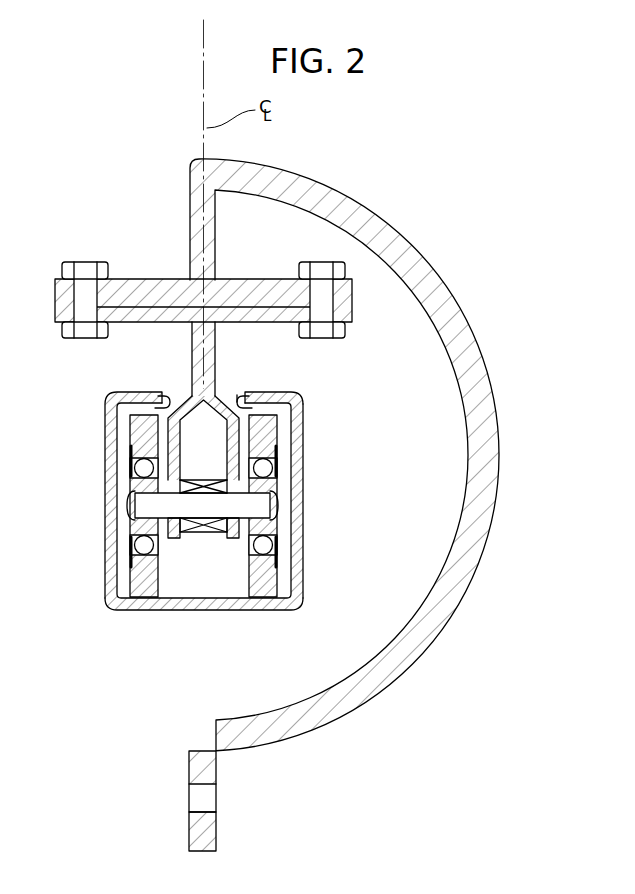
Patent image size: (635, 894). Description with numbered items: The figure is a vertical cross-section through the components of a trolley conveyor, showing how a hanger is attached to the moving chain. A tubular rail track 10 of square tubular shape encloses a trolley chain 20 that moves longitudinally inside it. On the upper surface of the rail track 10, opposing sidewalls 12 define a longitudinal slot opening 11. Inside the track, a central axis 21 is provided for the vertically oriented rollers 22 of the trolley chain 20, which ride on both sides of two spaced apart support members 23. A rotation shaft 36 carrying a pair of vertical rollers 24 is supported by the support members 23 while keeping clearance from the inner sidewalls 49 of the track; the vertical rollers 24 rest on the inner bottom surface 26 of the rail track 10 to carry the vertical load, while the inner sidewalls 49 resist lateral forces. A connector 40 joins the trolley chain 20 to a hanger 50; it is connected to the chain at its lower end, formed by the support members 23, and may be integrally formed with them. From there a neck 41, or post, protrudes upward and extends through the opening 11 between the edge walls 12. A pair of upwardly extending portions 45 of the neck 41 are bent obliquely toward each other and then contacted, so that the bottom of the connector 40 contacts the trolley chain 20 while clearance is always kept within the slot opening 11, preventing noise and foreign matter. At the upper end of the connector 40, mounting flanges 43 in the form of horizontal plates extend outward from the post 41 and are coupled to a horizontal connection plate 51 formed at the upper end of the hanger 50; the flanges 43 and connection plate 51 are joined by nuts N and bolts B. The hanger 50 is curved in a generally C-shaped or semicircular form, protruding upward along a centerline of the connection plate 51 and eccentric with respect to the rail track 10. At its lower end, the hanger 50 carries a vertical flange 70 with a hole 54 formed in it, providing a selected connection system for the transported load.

The tubular rail track 10 is at (105, 447).
The opening 11 is at (239, 395).
The sidewalls 12 is at (158, 397).
The trolley chain 20 is at (201, 504).
The central axis 21 is at (266, 505).
The rollers 22 is at (287, 578).
The support members 23 is at (240, 470).
The vertical rollers 24 is at (277, 432).
The inner bottom surface 26 is at (182, 598).
The rotation shaft 36 is at (142, 505).
The connector 40 is at (232, 381).
The neck 41 is at (191, 363).
The mounting flanges 43 is at (250, 312).
The upwardly extending portions 45 is at (186, 398).
The inner sidewalls 49 is at (290, 553).
The hanger 50 is at (432, 265).
The horizontal connection plate 51 is at (156, 287).
The hole 54 is at (196, 786).
The vertical flange 70 is at (216, 830).
The nuts N is at (63, 268).
The bolts B is at (63, 334).